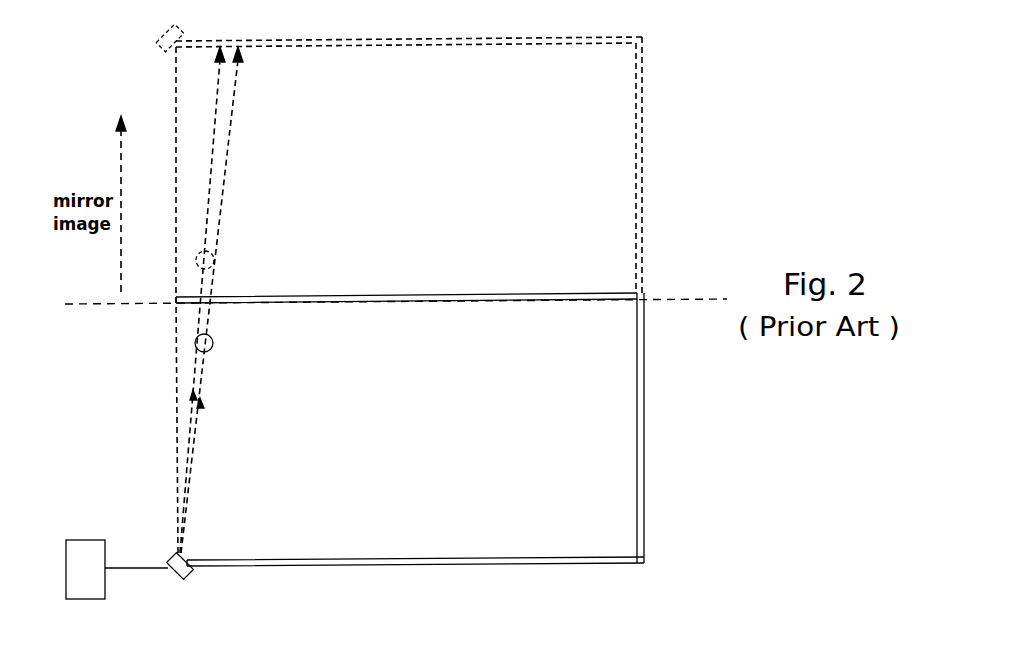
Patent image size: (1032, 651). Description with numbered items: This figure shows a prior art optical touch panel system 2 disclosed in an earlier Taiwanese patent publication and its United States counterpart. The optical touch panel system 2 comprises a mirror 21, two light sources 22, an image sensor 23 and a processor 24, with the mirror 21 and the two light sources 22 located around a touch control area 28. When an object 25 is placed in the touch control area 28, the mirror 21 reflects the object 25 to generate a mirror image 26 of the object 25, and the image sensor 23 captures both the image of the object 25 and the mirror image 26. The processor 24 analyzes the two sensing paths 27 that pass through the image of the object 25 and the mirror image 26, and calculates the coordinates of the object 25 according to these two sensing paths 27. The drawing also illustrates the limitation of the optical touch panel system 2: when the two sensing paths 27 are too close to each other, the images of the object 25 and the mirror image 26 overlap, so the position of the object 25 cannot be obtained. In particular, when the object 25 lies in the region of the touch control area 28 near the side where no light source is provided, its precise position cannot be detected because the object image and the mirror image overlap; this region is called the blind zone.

The optical touch panel system 2 is at (685, 252).
The mirror 21 is at (588, 295).
The light sources 22 is at (623, 558).
The image sensor 23 is at (170, 582).
The processor 24 is at (87, 540).
The object 25 is at (195, 347).
The mirror image 26 is at (196, 268).
The sensing paths 27 is at (192, 397).
The touch control area 28 is at (395, 507).